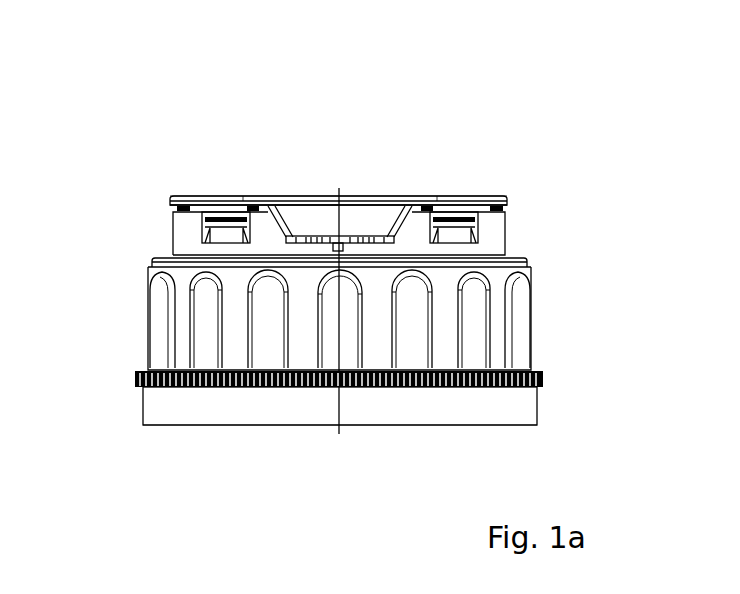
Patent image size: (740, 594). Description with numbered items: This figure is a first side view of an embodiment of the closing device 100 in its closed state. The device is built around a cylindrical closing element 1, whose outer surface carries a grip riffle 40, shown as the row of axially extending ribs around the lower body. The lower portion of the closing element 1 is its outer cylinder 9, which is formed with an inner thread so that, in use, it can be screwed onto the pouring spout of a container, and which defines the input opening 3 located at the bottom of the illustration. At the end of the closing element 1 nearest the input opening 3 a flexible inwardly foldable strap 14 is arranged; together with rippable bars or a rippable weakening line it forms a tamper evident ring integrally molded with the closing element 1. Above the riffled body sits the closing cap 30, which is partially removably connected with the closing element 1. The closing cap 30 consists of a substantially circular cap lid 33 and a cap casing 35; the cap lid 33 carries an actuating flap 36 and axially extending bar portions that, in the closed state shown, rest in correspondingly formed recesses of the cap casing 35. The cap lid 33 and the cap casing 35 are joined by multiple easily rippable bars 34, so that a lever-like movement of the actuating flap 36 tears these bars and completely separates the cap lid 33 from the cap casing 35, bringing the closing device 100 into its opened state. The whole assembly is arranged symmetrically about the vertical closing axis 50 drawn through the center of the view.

The closing device 100 is at (571, 138).
The closing element 1 is at (321, 318).
The outer cylinder 9 is at (321, 318).
The closing cap 30 is at (359, 161).
The cap lid 33 is at (358, 197).
The rippable bars 34 is at (423, 197).
The cap casing 35 is at (494, 238).
The actuating flap 36 is at (304, 215).
The grip riffle 40 is at (476, 338).
The closing axis 50 is at (338, 403).
The flexible inwardly foldable strap 14 is at (459, 403).
The input opening 3 is at (377, 432).